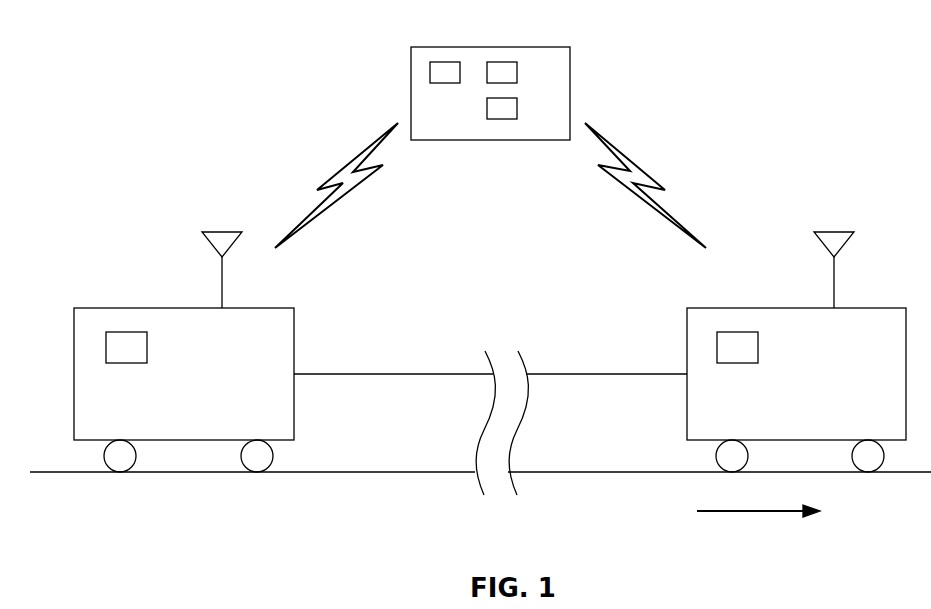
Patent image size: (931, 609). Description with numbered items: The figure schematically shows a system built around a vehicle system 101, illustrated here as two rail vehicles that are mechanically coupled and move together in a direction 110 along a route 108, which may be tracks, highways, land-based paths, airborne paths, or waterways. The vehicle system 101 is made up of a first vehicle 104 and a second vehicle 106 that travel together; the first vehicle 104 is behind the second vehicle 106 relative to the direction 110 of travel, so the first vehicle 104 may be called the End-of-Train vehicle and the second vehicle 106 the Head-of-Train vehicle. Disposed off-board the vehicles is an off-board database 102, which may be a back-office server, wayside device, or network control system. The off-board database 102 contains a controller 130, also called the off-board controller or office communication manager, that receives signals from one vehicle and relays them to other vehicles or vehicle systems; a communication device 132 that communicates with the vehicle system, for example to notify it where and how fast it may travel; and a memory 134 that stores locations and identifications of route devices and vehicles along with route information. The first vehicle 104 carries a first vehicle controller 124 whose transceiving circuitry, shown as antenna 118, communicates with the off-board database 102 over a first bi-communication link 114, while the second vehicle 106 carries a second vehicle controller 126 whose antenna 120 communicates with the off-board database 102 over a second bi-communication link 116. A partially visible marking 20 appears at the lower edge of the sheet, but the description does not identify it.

The vehicle system 101 is at (135, 226).
The off-board database 102 is at (570, 90).
The first vehicle 104 is at (120, 308).
The second vehicle 106 is at (877, 307).
The route 108 is at (573, 473).
The direction 110 is at (758, 513).
The first bi-communication link 114 is at (342, 168).
The second bi-communication link 116 is at (645, 172).
The antenna 118 is at (222, 231).
The antenna 120 is at (834, 231).
The first vehicle controller 124 is at (148, 347).
The second vehicle controller 126 is at (760, 347).
The controller 130 is at (445, 62).
The communication device 132 is at (502, 62).
The memory 134 is at (502, 119).
The reference numeral (partially shown) 20 is at (873, 608).